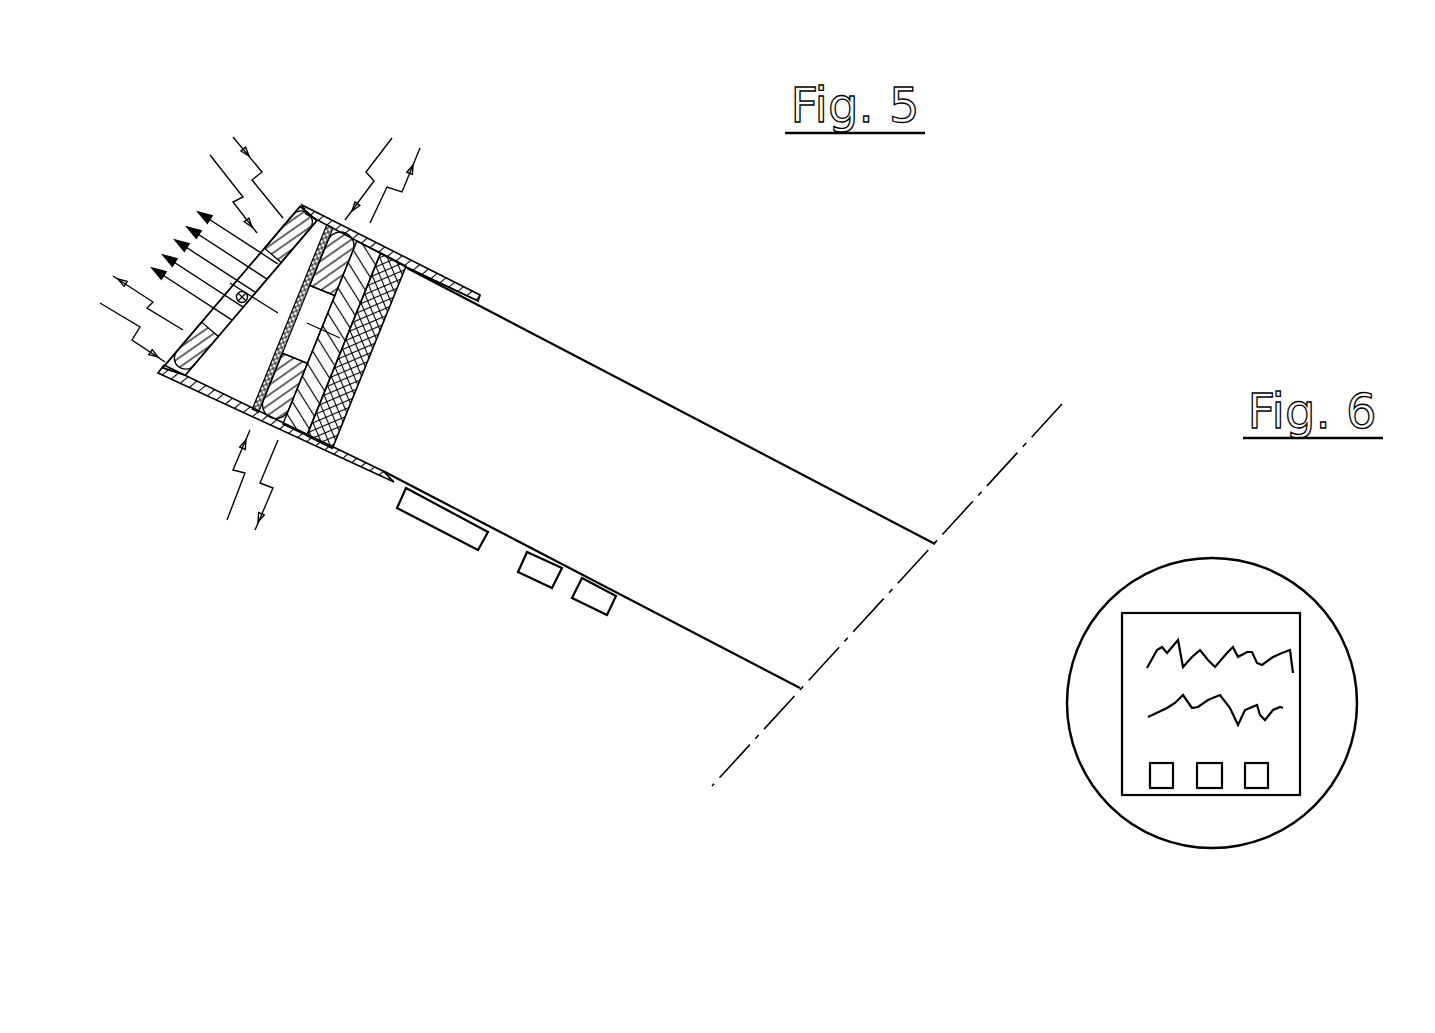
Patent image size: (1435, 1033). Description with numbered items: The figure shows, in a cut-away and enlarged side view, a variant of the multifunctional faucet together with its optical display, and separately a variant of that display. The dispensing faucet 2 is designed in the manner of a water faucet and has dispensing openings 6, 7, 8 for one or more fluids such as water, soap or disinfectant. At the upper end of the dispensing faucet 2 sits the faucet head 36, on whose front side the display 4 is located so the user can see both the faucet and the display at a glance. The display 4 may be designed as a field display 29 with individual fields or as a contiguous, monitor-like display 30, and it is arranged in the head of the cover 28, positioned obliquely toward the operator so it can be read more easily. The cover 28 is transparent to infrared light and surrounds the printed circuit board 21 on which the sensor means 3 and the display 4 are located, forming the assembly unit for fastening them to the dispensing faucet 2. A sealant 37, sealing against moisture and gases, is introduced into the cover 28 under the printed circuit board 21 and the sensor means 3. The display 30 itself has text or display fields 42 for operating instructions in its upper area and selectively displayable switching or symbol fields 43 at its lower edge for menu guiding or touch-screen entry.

In FIG. 5, the dispensing faucet 2 is at (697, 473).
In FIG. 6, the dispensing faucet 2 is at (1210, 641).
In FIG. 5, the sensor means 3 is at (333, 228).
In FIG. 5, the display 4 is at (207, 262).
In FIG. 6, the display 4 is at (1133, 713).
In FIG. 5, the dispensing opening 6 is at (448, 513).
In FIG. 5, the dispensing opening 7 is at (533, 568).
In FIG. 5, the dispensing opening 8 is at (588, 602).
In FIG. 5, the printed circuit board 21 is at (423, 174).
In FIG. 5, the cover 28 is at (465, 283).
In FIG. 6, the cover 28 is at (1168, 582).
In FIG. 5, the field display 29 is at (207, 262).
In FIG. 5, the display 30 is at (207, 262).
In FIG. 6, the display 30 is at (1138, 732).
In FIG. 5, the faucet head 36 is at (567, 307).
In FIG. 5, the sealant 37 is at (318, 452).
In FIG. 6, the text or display fields 42 is at (1265, 660).
In FIG. 6, the switching or symbol fields 43 is at (1260, 778).